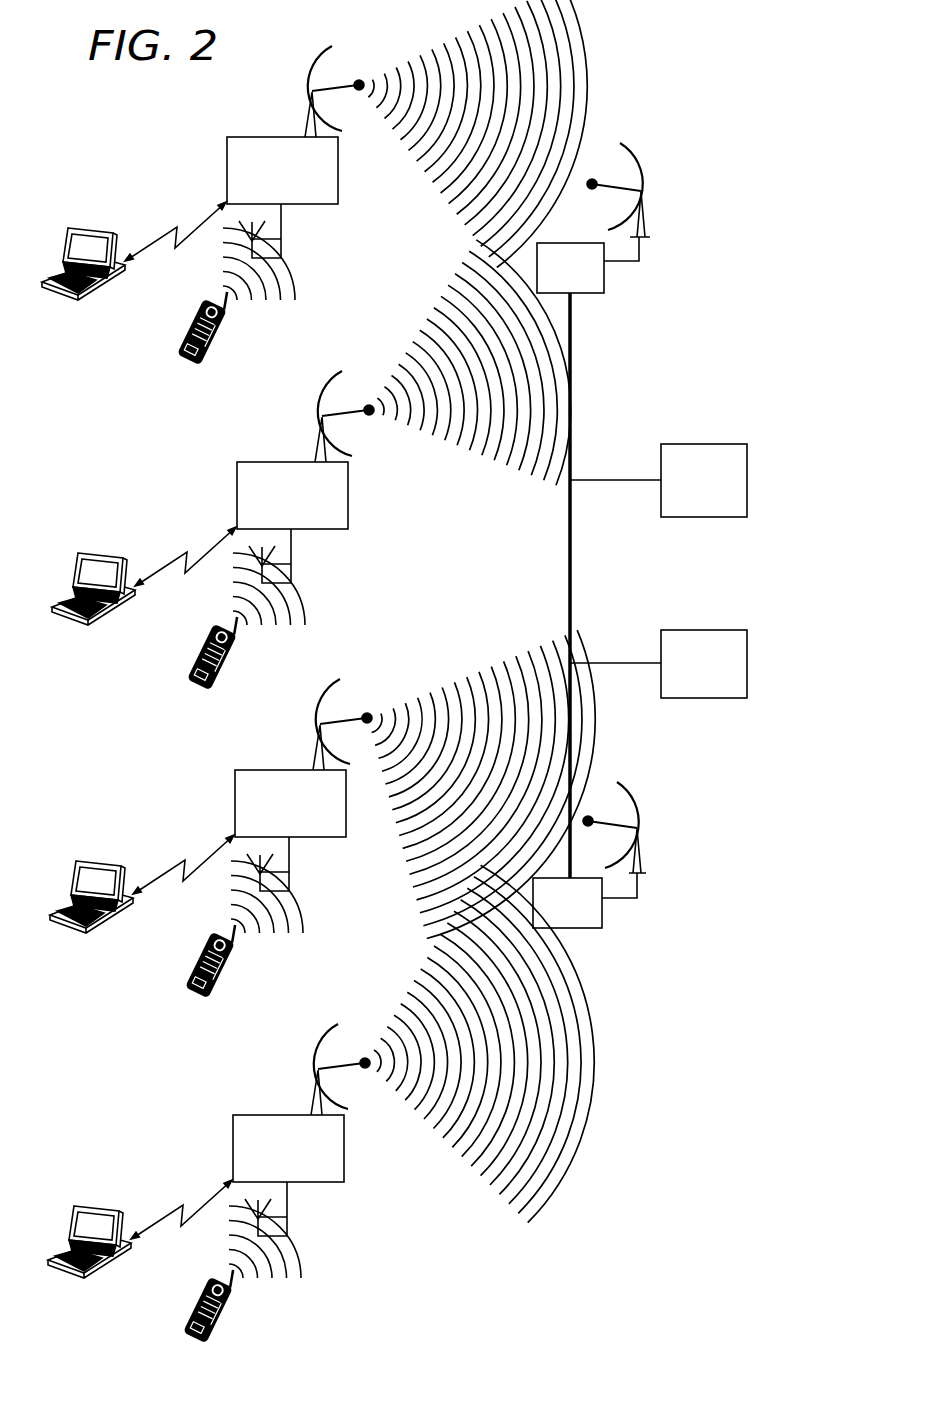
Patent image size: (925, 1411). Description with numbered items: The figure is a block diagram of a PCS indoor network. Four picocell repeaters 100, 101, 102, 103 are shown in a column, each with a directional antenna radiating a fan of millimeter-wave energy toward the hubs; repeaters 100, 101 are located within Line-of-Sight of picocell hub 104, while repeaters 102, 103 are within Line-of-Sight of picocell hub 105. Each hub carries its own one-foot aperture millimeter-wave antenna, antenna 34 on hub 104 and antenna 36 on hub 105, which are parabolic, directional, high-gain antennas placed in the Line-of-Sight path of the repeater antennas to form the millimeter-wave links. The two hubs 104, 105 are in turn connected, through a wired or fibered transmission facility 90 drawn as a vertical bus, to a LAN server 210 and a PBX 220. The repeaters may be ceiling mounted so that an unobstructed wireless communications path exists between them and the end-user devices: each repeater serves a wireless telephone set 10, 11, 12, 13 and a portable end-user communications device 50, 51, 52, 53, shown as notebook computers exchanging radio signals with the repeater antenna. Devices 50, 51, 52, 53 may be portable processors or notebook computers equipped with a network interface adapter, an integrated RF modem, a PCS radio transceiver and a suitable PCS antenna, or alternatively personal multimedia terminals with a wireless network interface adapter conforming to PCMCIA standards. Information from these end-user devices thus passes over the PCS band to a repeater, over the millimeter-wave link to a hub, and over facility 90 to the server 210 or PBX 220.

The wireless telephone set 10 is at (216, 342).
The wireless telephone set 11 is at (235, 649).
The wireless telephone set 12 is at (233, 957).
The wireless telephone set 13 is at (231, 1302).
The millimeter-wave antenna 34 is at (645, 173).
The millimeter-wave antenna 36 is at (640, 812).
The end-user communications device 50 is at (97, 226).
The end-user communications device 51 is at (93, 562).
The end-user communications device 52 is at (91, 870).
The end-user communications device 53 is at (89, 1215).
The transmission facility 90 is at (573, 575).
The picocell repeater 100 is at (255, 140).
The picocell repeater 101 is at (301, 498).
The picocell repeater 102 is at (299, 806).
The picocell repeater 103 is at (297, 1151).
The picocell hub 104 is at (592, 292).
The picocell hub 105 is at (597, 925).
The LAN server 210 is at (744, 468).
The PBX 220 is at (745, 676).